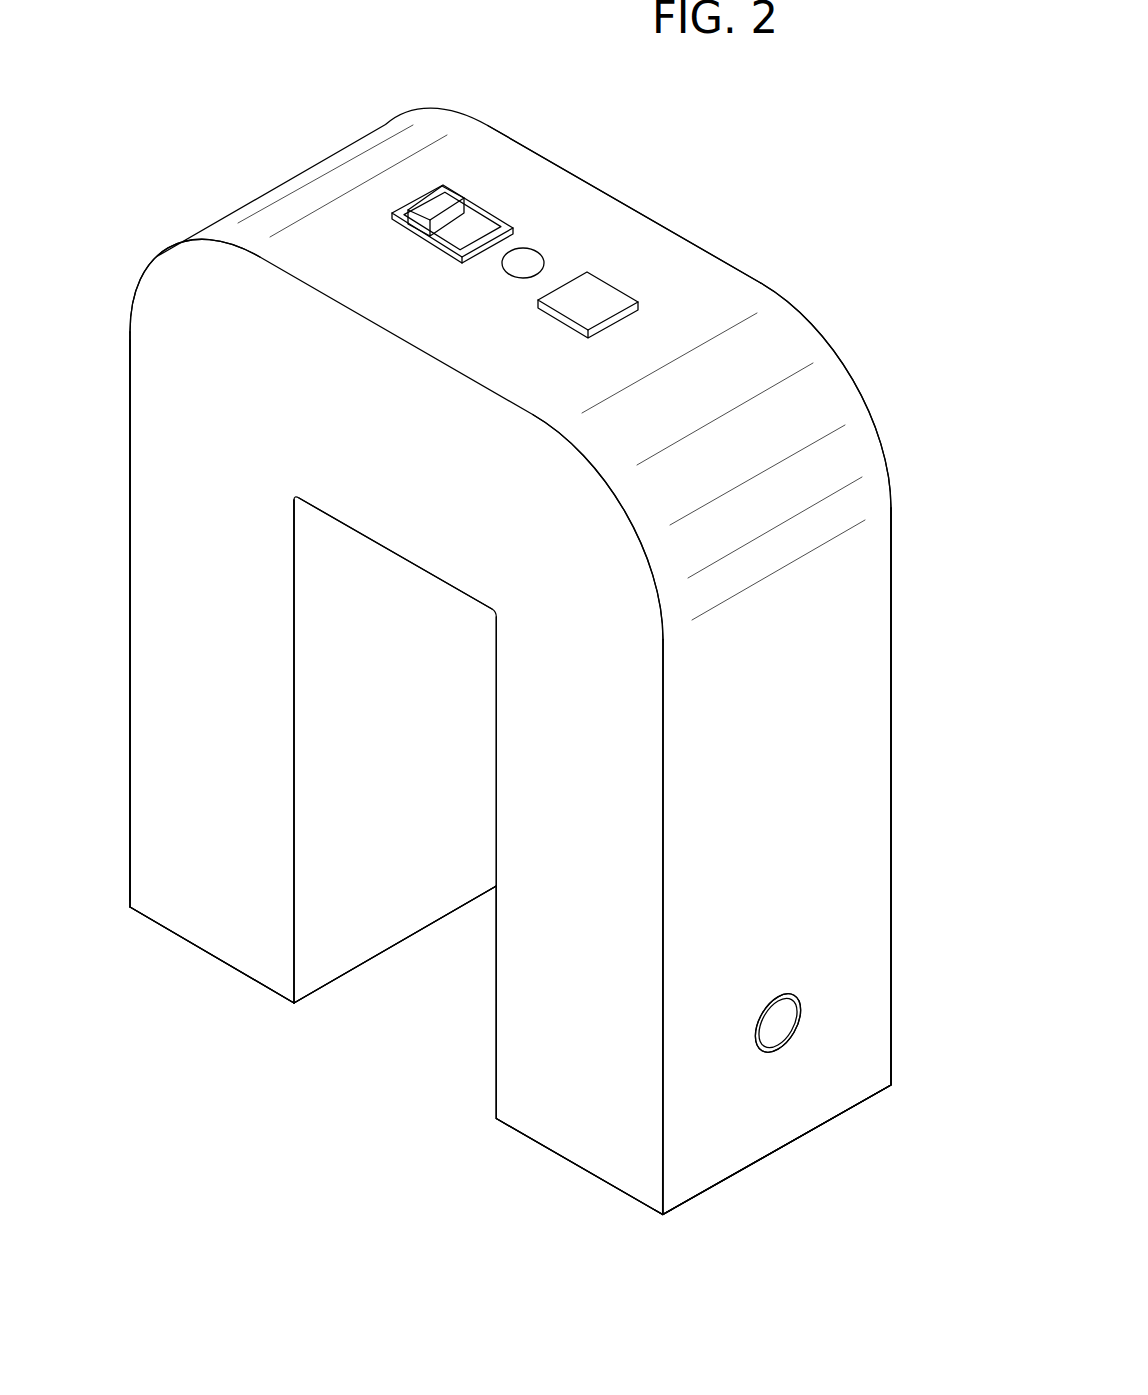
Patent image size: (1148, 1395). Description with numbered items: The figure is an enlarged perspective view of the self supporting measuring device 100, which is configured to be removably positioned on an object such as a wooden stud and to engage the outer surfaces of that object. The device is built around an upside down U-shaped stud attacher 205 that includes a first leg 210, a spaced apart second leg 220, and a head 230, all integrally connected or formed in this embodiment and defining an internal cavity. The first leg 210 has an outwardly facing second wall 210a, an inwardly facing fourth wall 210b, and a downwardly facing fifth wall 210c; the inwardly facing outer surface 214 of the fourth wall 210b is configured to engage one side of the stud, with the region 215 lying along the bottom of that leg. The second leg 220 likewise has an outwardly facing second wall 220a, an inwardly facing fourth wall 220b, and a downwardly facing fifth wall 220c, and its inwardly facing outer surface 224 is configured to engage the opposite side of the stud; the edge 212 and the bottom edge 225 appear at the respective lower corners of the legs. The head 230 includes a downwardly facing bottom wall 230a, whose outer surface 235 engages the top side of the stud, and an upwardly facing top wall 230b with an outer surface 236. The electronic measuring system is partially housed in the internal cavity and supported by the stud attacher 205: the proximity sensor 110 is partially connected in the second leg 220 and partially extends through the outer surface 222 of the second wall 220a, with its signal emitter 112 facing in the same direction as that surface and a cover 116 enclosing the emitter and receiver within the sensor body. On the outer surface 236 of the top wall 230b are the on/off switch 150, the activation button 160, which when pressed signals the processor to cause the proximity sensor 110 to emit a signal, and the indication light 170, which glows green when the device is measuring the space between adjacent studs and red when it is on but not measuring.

The self supporting measuring device 100 is at (256, 1030).
The proximity sensor 110 is at (785, 1047).
The proximity sensor signal emitter 112 is at (778, 1020).
The cover 116 is at (788, 1035).
The on/off switch 150 is at (450, 190).
The activation button 160 is at (613, 285).
The indication light 170 is at (538, 249).
The stud attacher 205 is at (134, 289).
The first leg 210 is at (180, 945).
The outwardly facing second wall 210a is at (130, 574).
The inwardly facing fourth wall 210b is at (362, 920).
The downwardly facing fifth wall 210c is at (228, 965).
The outer edge of first pillar 212 is at (130, 702).
The inwardly facing outer surface 214 is at (317, 942).
The floor of passage 215 is at (438, 922).
The second leg 220 is at (540, 1152).
The outwardly facing second wall 220a is at (822, 1092).
The inwardly facing fourth wall 220b is at (497, 1102).
The downwardly facing fifth wall 220c is at (680, 1208).
The outer surface 222 is at (768, 1123).
The inwardly facing outer surface 224 is at (497, 1065).
The bottom edge of second pillar 225 is at (718, 1185).
The head 230 is at (784, 293).
The downwardly facing fifth or bottom wall 230a is at (423, 568).
The upwardly facing sixth or top wall 230b is at (562, 195).
The outer surface 235 is at (368, 535).
The outer surface 236 is at (443, 156).